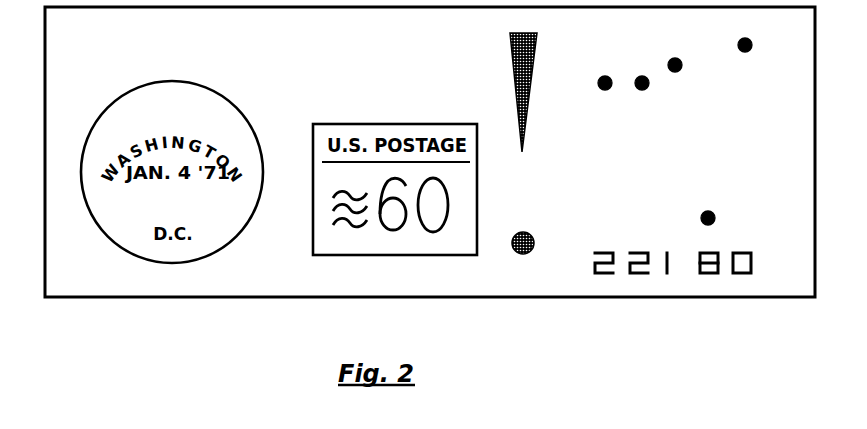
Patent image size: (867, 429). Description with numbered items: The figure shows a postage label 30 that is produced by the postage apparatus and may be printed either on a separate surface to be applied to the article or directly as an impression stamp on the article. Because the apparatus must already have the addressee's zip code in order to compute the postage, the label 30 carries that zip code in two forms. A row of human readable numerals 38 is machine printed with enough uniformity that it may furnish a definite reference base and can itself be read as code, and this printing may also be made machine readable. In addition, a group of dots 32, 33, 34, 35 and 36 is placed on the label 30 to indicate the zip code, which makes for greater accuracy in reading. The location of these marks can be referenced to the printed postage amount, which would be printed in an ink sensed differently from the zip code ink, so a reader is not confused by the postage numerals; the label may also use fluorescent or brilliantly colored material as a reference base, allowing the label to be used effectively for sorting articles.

The postage label 30 is at (343, 77).
The dot 32 is at (607, 90).
The dot 33 is at (647, 88).
The dot 34 is at (680, 70).
The dot 35 is at (713, 223).
The dot 36 is at (751, 49).
The row of numerals 38 is at (594, 268).